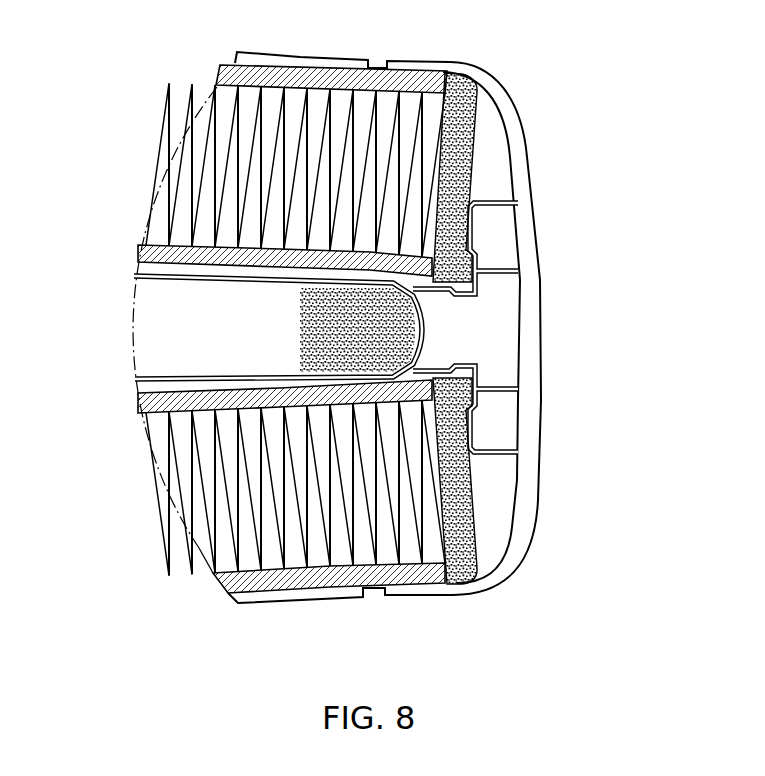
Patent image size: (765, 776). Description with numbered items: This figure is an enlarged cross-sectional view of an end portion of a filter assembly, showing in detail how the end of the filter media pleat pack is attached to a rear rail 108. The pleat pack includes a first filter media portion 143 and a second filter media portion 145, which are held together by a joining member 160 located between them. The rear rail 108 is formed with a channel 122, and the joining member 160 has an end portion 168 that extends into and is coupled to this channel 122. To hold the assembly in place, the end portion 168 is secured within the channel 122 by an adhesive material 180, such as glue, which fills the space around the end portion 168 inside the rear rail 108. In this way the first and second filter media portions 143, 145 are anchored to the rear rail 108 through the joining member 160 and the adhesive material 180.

The joining member 160 is at (226, 58).
The rear rail 108 is at (520, 132).
The channel 122 is at (505, 150).
The first filter media portion 143 is at (182, 216).
The second filter media portion 145 is at (220, 555).
The end portion 168 is at (472, 220).
The adhesive material 180 is at (475, 250).